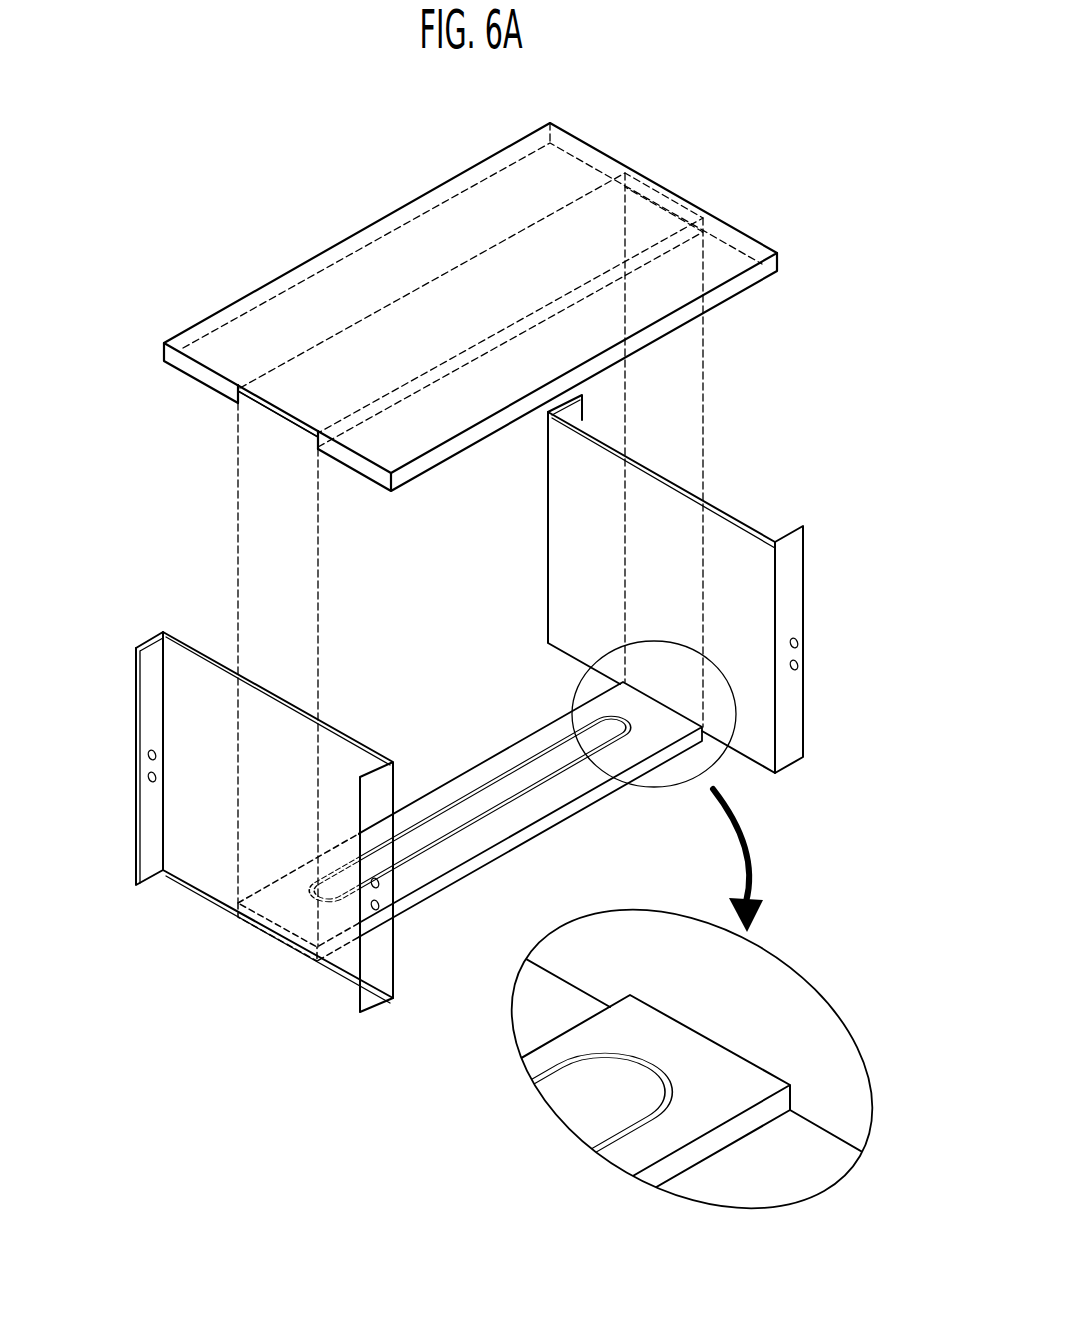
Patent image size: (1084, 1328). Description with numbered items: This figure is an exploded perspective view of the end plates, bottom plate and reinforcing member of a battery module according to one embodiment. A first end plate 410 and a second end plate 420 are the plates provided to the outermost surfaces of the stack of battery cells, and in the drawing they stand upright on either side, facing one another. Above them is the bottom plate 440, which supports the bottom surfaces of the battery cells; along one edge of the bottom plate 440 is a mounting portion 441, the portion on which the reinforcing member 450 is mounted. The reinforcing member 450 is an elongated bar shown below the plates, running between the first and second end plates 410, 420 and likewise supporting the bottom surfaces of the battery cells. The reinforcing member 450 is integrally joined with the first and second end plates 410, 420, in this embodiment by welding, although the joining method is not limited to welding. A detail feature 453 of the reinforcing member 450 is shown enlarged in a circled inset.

The first end plate 410 is at (183, 809).
The second end plate 420 is at (822, 570).
The bottom plate 440 is at (462, 470).
The mounting portion 441 is at (272, 432).
The reinforcing member 450 is at (563, 830).
The slot of connecting bar 453 is at (662, 696).